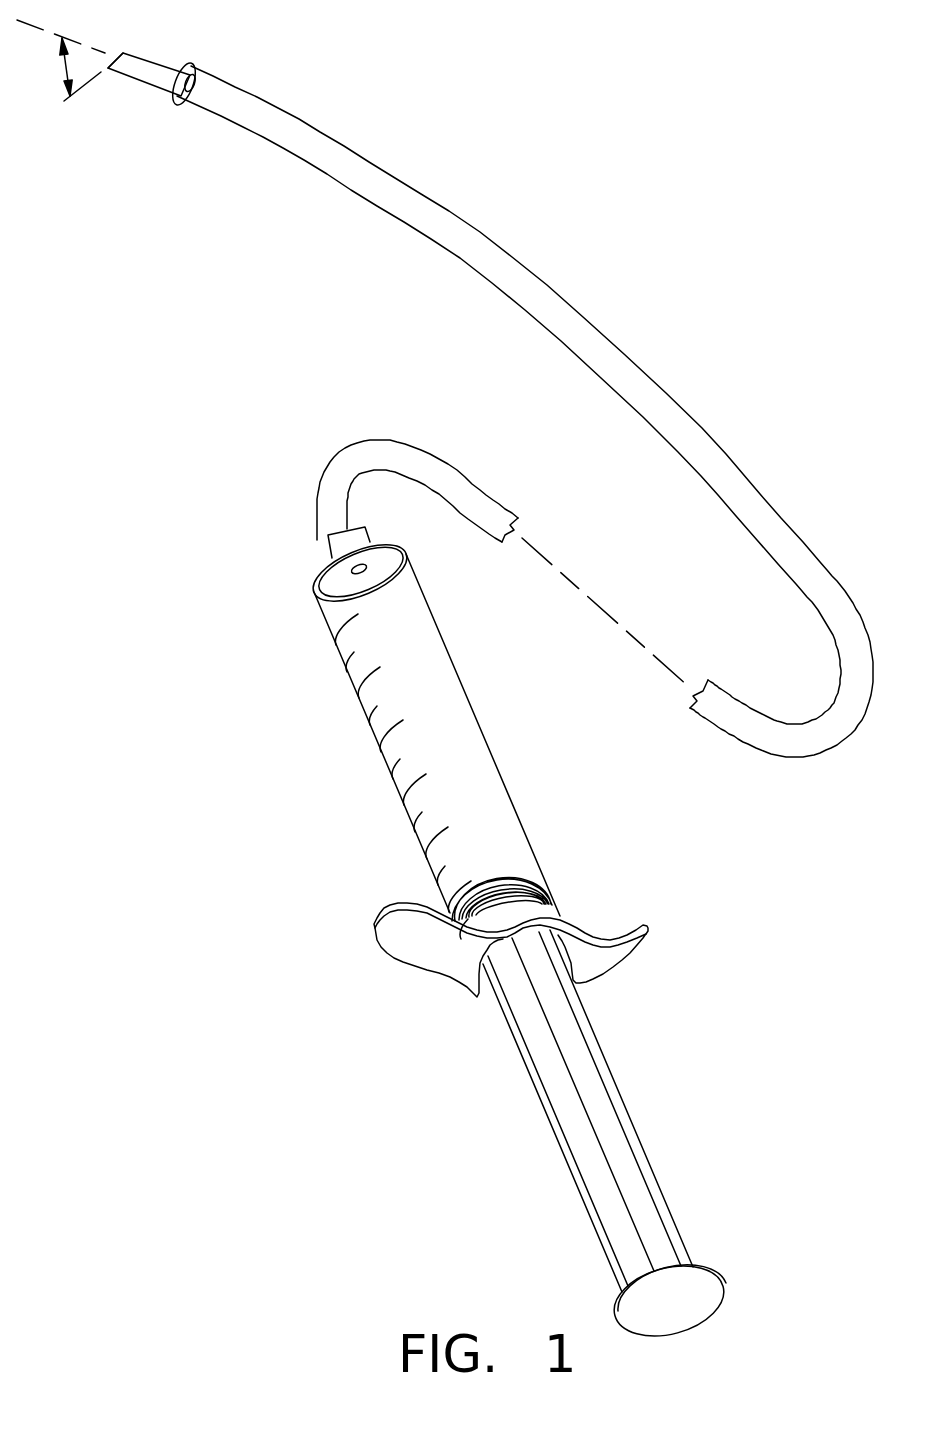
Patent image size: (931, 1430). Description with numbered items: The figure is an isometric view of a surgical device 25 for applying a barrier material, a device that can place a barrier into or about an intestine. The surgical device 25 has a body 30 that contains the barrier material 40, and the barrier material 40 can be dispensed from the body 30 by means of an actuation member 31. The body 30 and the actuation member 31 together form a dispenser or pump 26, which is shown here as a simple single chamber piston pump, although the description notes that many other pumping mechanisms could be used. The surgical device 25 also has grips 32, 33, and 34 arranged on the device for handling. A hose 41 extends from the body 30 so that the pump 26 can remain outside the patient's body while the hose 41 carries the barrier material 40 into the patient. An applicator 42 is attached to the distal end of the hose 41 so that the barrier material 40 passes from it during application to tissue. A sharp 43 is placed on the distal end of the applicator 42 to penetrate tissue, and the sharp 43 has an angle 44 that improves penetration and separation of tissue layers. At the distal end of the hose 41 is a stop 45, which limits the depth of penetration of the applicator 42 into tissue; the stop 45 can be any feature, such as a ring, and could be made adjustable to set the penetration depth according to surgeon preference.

The surgical device 25 is at (176, 743).
The pump 26 is at (220, 958).
The body 30 is at (498, 797).
The actuation member 31 is at (657, 1180).
The grip 32 is at (683, 1302).
The grip 33 is at (623, 927).
The grip 34 is at (397, 903).
The barrier material 40 is at (380, 650).
The hose 41 is at (728, 477).
The applicator 42 is at (153, 73).
The sharp 43 is at (113, 58).
The angle 44 is at (63, 63).
The stop 45 is at (192, 62).